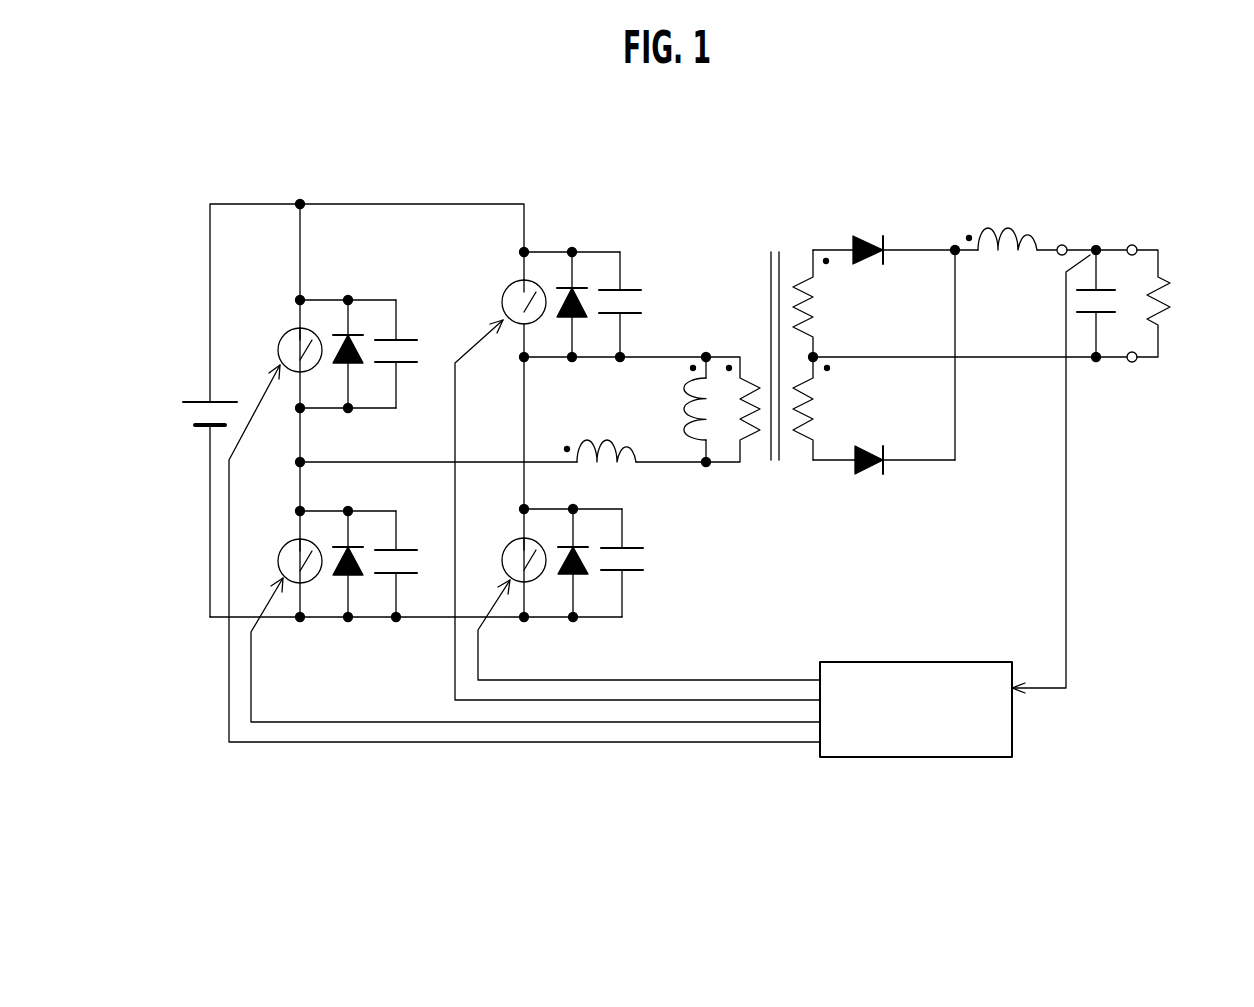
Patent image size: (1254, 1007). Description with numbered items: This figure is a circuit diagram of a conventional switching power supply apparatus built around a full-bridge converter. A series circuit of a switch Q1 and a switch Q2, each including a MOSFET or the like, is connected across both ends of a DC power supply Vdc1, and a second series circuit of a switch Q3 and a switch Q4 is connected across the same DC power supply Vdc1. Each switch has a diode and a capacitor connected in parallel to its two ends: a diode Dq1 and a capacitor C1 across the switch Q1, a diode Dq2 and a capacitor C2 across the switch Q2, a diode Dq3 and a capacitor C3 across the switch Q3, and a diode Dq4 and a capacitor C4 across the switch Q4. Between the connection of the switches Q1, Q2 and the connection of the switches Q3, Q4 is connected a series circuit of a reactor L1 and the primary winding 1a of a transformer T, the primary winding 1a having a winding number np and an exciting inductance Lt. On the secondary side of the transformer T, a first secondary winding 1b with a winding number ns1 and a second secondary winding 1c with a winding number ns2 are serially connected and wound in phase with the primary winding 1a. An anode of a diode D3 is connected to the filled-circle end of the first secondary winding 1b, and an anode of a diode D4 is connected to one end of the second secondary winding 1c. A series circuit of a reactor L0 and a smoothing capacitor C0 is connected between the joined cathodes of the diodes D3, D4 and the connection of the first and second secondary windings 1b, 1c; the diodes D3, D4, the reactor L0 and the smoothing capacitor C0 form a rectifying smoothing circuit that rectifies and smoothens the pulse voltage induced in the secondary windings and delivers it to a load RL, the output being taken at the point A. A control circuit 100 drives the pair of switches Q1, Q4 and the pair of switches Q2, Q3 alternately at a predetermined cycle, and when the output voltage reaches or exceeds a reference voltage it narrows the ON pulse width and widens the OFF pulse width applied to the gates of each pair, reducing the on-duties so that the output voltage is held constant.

The DC power supply Vdc1 is at (187, 399).
The switch Q1 is at (524, 519).
The switch Q2 is at (532, 615).
The switch Q3 is at (637, 474).
The switch Q4 is at (646, 593).
The diode Dq1 is at (348, 336).
The diode Dq2 is at (348, 547).
The diode Dq3 is at (572, 287).
The diode Dq4 is at (573, 546).
The capacitor C1 is at (404, 354).
The capacitor C2 is at (404, 566).
The capacitor C3 is at (629, 307).
The capacitor C4 is at (630, 563).
The reactor L1 is at (601, 433).
The exciting inductance Lt is at (680, 409).
The transformer T is at (779, 340).
The winding number of primary winding np is at (733, 409).
The winding number of first secondary winding ns1 is at (824, 306).
The winding number of second secondary winding ns2 is at (825, 408).
The primary winding 1a is at (731, 369).
The first secondary winding 1b is at (825, 267).
The second secondary winding 1c is at (825, 450).
The diode D3 is at (884, 233).
The diode D4 is at (884, 477).
The reactor L0 is at (1006, 221).
The smoothing capacitor C0 is at (1074, 306).
The load RL is at (1173, 303).
The output terminal A is at (1056, 452).
The control circuit 100 is at (980, 757).